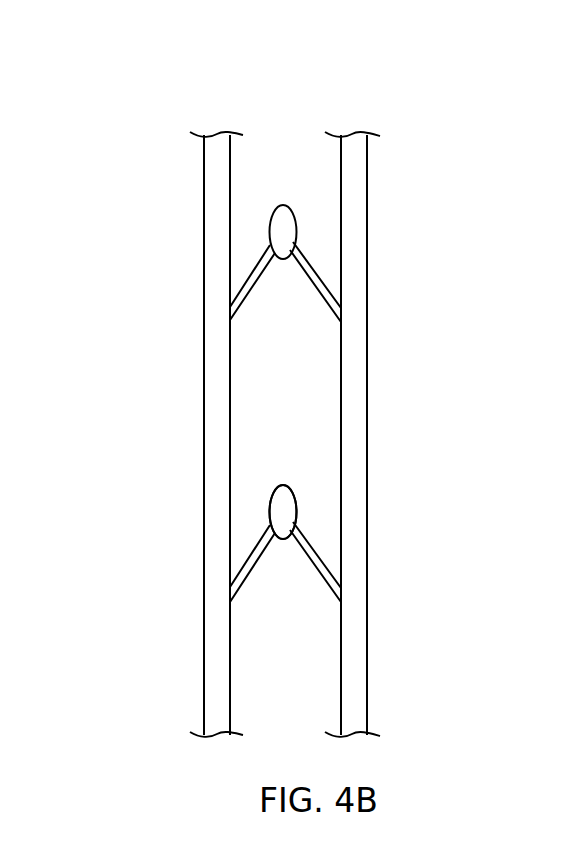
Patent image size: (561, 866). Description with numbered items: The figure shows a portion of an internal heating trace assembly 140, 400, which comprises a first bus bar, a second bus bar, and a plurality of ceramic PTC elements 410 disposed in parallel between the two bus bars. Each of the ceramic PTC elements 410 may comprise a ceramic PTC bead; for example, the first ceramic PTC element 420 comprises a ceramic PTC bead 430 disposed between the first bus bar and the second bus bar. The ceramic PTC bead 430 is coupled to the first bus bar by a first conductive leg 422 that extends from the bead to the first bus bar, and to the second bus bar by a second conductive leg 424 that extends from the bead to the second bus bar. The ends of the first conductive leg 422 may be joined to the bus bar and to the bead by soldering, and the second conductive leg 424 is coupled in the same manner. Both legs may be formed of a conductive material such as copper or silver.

The internal heating trace assembly 140 is at (148, 79).
The internal heating trace assembly 400 is at (143, 111).
The plurality of ceramic PTC elements 410 is at (285, 232).
The first ceramic PTC element 420 is at (288, 518).
The first conductive leg 422 is at (250, 552).
The second conductive leg 424 is at (317, 552).
The ceramic PTC bead 430 is at (293, 493).